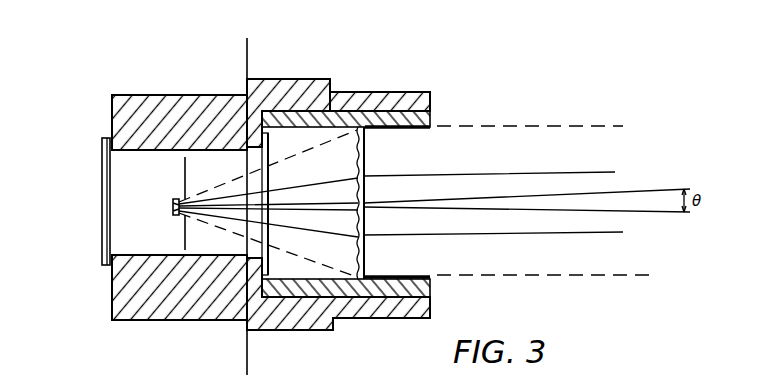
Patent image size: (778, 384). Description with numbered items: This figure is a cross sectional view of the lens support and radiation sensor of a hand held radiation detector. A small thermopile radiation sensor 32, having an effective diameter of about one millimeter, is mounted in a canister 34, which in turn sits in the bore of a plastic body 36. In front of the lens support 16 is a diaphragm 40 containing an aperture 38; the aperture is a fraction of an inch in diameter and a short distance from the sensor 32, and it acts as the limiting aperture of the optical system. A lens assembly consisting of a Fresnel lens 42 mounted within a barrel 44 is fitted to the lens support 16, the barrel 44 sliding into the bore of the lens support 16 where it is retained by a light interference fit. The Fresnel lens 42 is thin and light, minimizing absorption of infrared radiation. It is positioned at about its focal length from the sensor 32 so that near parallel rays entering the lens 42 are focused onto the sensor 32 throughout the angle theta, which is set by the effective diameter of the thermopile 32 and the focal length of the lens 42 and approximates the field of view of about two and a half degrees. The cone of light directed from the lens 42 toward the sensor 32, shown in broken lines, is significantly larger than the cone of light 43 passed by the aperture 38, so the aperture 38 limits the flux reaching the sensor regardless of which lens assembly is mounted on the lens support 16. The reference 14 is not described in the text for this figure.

The mounting plate / reference line 14 is at (248, 57).
The lens support 16 is at (368, 92).
The thermopile radiation sensor 32 is at (172, 247).
The canister 34 is at (102, 197).
The plastic body 36 is at (112, 117).
The aperture 38 is at (270, 198).
The diaphragm 40 is at (325, 79).
The Fresnel lens 42 is at (367, 160).
The cone of light 43 is at (312, 300).
The barrel 44 is at (433, 123).